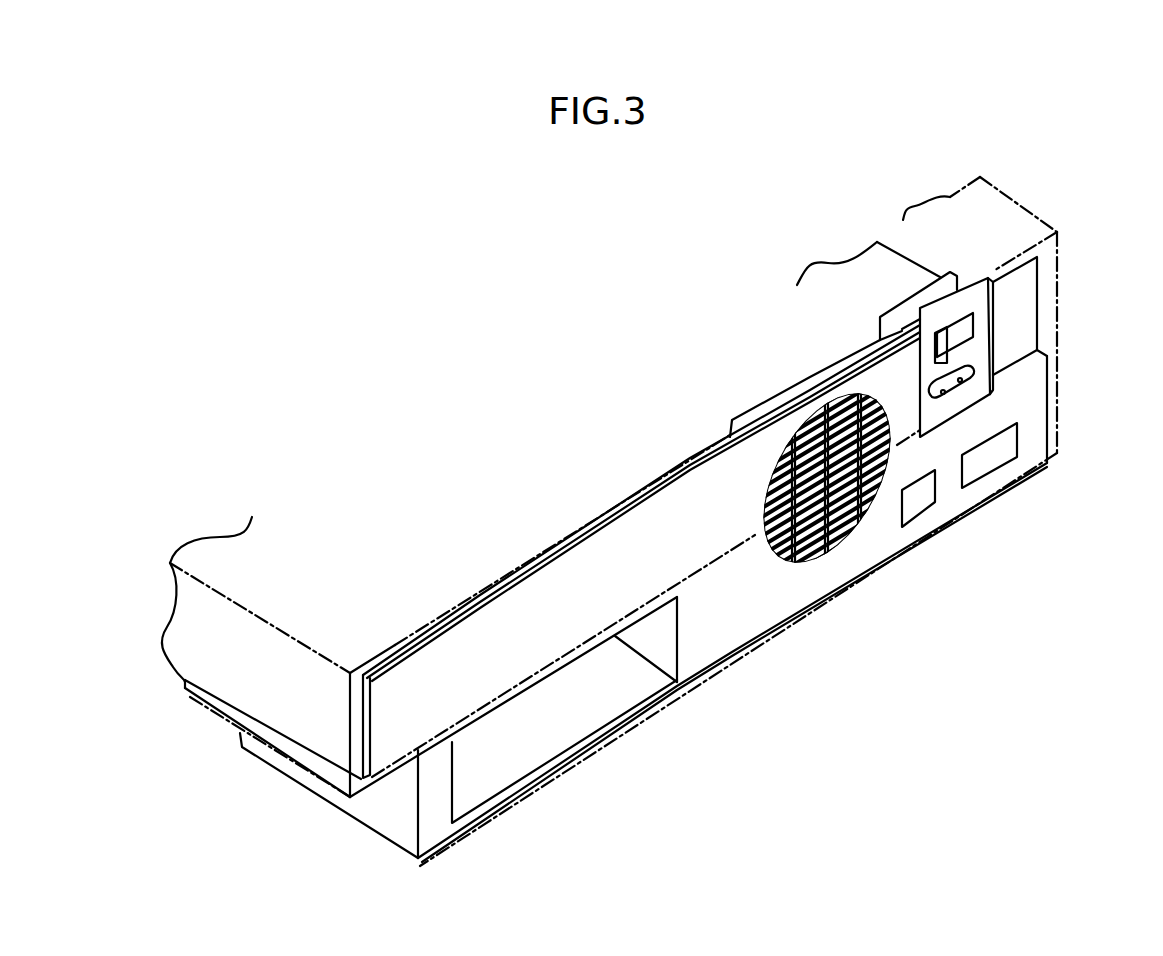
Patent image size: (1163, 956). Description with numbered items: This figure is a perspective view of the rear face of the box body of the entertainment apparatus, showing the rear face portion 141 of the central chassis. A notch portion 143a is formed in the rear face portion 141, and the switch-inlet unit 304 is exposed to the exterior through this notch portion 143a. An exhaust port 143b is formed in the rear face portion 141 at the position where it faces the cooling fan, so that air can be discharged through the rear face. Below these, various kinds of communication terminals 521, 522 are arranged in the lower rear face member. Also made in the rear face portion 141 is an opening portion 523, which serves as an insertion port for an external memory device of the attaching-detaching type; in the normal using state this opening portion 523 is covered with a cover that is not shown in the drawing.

The rear face portion 141 is at (703, 637).
The notch portion 143a is at (992, 333).
The exhaust port 143b is at (822, 538).
The switch-inlet unit 304 is at (978, 302).
The communication terminal 521 is at (988, 462).
The communication terminal 522 is at (928, 505).
The opening portion 523 is at (580, 728).